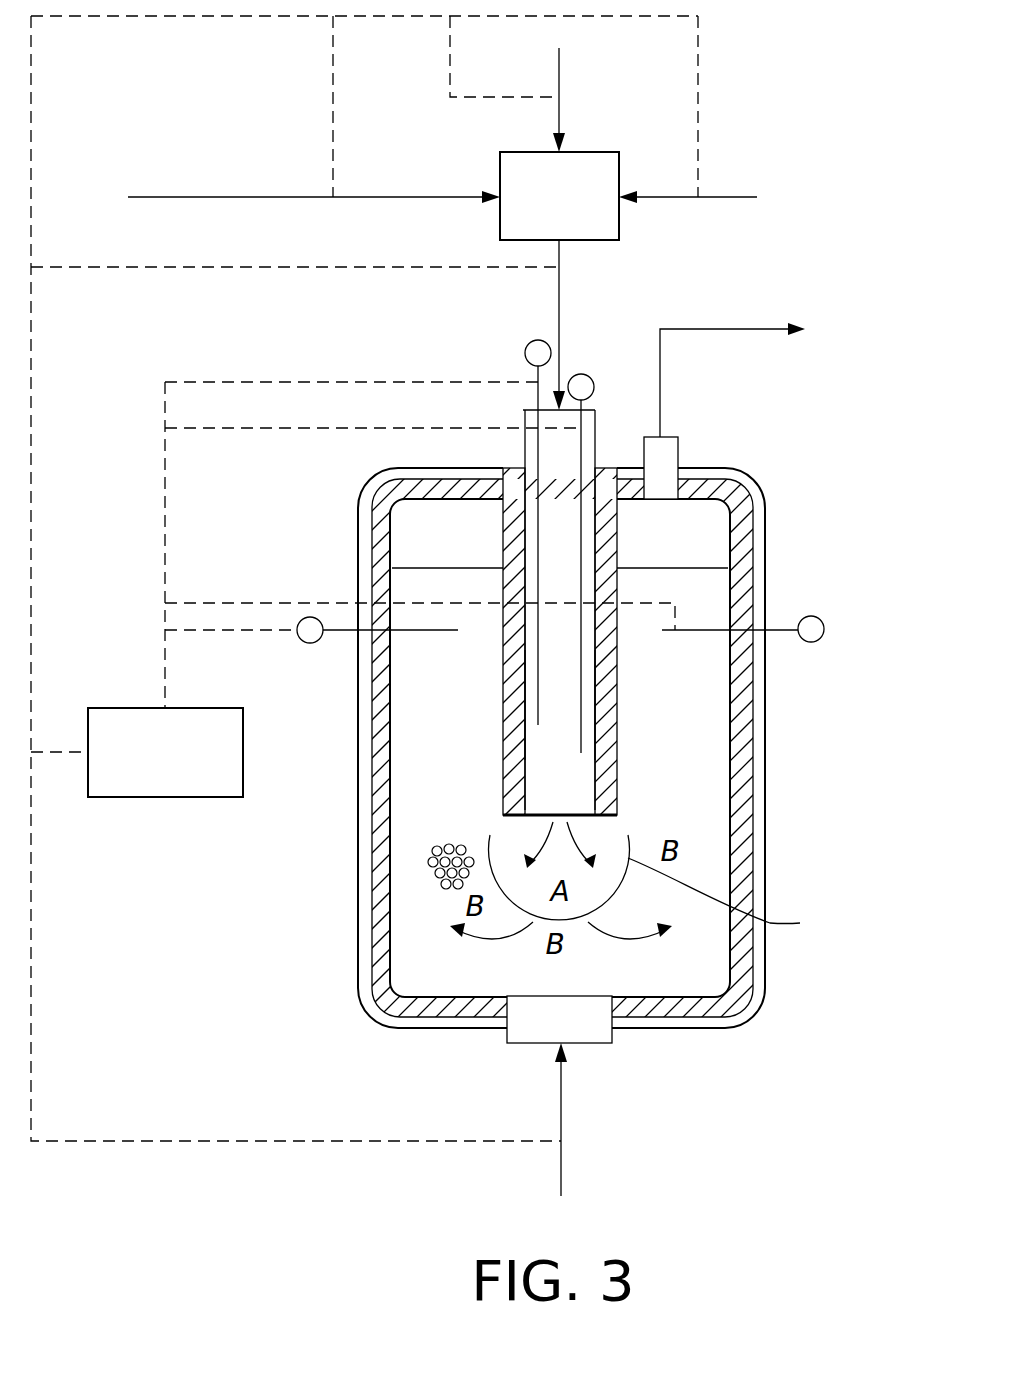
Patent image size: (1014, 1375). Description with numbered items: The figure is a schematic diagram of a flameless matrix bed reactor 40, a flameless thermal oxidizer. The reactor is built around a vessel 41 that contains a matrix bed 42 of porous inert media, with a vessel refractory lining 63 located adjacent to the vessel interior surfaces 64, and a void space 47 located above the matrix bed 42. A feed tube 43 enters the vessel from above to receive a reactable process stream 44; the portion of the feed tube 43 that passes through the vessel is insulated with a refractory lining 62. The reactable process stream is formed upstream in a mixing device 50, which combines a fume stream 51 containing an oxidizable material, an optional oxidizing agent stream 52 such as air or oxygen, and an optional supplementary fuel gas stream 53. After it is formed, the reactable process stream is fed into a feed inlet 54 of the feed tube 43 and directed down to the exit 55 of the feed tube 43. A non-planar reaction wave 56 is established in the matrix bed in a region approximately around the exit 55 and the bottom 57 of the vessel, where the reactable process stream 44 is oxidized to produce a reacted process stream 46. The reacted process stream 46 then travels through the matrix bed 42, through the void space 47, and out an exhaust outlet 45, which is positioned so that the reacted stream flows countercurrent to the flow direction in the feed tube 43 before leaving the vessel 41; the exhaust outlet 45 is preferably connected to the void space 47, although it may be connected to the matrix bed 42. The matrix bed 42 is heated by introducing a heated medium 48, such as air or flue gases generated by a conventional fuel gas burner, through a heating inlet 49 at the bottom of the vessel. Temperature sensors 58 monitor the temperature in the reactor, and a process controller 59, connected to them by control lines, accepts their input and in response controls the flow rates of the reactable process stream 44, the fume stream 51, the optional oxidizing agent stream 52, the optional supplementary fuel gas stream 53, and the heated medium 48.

The flameless matrix bed reactor 40 is at (860, 99).
The vessel 41 is at (765, 855).
The matrix bed 42 is at (430, 870).
The feed tube 43 is at (525, 445).
The reactable process stream 44 is at (566, 292).
The exhaust outlet 45 is at (670, 458).
The reacted process stream 46 is at (705, 329).
The void space 47 is at (688, 538).
The heated medium 48 is at (561, 1105).
The heating inlet 49 is at (590, 1045).
The mixing device 50 is at (587, 162).
The fume stream 51 is at (223, 197).
The oxidizing agent stream 52 is at (559, 73).
The supplementary fuel gas stream 53 is at (715, 195).
The feed inlet 54 is at (523, 400).
The exit 55 is at (548, 828).
The non-planar reaction wave 56 is at (663, 887).
The bottom 57 is at (705, 1030).
The temperature sensors 58 is at (535, 368).
The process controller 59 is at (178, 775).
The refractory lining 62 is at (503, 684).
The vessel refractory lining 63 is at (730, 738).
The vessel interior surfaces 64 is at (745, 805).